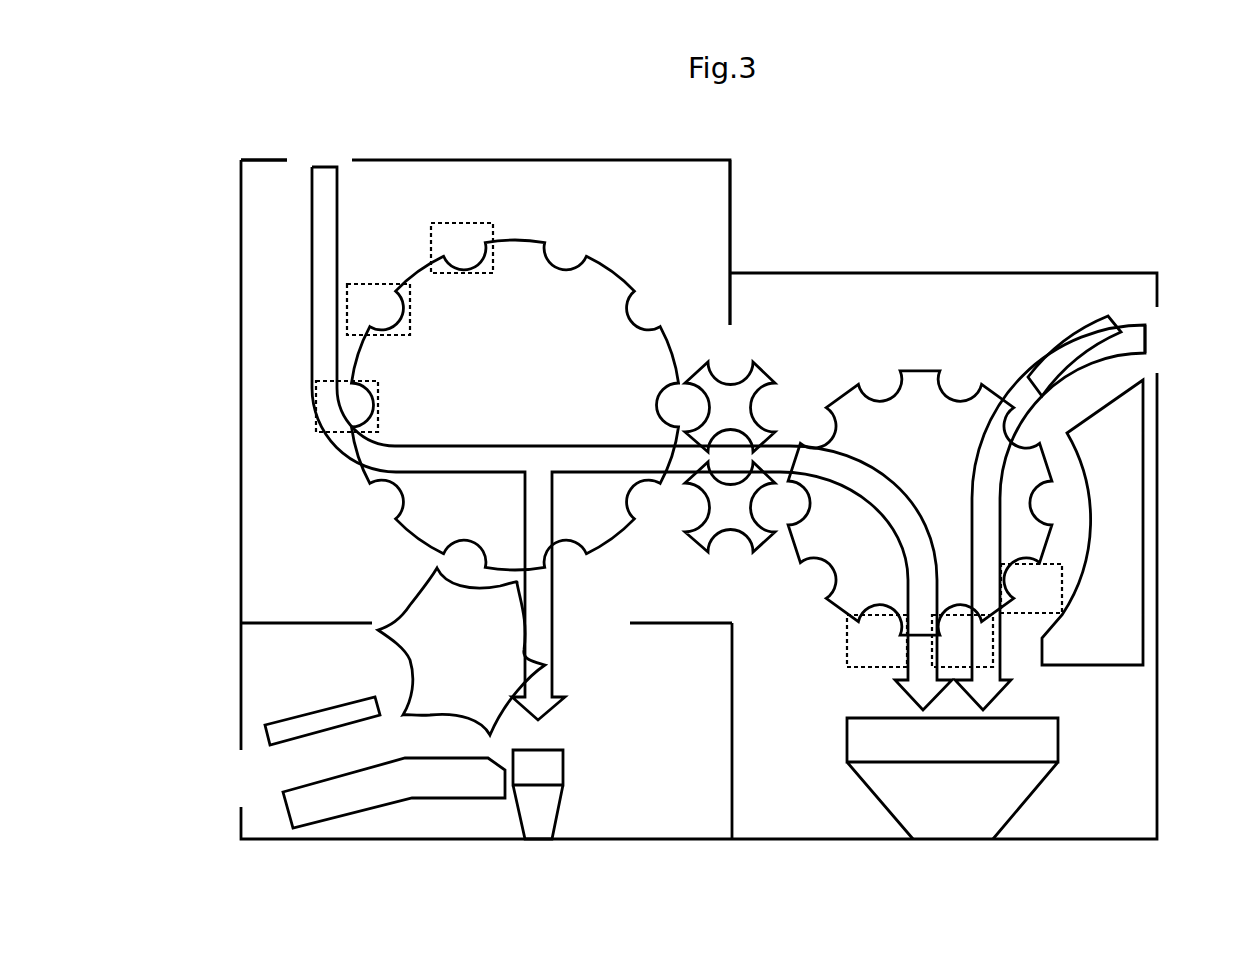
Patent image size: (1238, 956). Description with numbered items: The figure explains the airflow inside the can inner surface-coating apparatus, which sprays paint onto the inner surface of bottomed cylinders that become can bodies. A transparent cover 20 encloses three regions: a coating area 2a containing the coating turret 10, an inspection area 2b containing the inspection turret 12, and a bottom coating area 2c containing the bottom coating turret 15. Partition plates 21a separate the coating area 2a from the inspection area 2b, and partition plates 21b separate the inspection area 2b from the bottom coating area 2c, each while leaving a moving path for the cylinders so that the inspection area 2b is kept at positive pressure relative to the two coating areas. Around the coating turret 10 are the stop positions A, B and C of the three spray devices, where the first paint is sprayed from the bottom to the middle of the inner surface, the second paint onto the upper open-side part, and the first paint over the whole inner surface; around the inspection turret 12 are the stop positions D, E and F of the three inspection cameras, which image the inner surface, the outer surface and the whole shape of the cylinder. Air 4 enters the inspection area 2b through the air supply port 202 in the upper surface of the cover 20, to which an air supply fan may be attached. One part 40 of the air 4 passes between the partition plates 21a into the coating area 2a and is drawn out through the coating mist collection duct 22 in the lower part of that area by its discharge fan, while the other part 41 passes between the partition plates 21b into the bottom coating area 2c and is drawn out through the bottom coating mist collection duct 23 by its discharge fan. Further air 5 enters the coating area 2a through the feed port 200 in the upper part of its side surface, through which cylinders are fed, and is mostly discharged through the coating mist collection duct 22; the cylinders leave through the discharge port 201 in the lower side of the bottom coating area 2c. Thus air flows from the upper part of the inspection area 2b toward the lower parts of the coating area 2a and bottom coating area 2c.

The cover 20 is at (733, 178).
The partition plates 21a is at (730, 312).
The partition plates 21b is at (290, 623).
The air supply port 202 is at (346, 146).
The air 4 is at (310, 228).
The other part of the air 41 is at (525, 516).
The part of the air 40 is at (890, 470).
The inspection turret 12 is at (626, 268).
The inspection area 2b is at (535, 214).
The coating turret 10 is at (920, 370).
The coating area 2a is at (983, 323).
The feed port 200 is at (1160, 337).
The air 5 is at (1044, 352).
The coating mist collection duct 22 is at (1058, 742).
The bottom coating mist collection duct 23 is at (563, 768).
The bottom coating turret 15 is at (432, 657).
The bottom coating area 2c is at (280, 684).
The discharge port 201 is at (237, 783).
The position of the most upstream spray device A is at (1032, 581).
The position of the second spray device B is at (962, 635).
The position of the most downstream spray device C is at (875, 635).
The position of the most upstream inspection camera D is at (457, 242).
The position of the second inspection camera E is at (378, 304).
The position of the most downstream inspection camera F is at (347, 403).